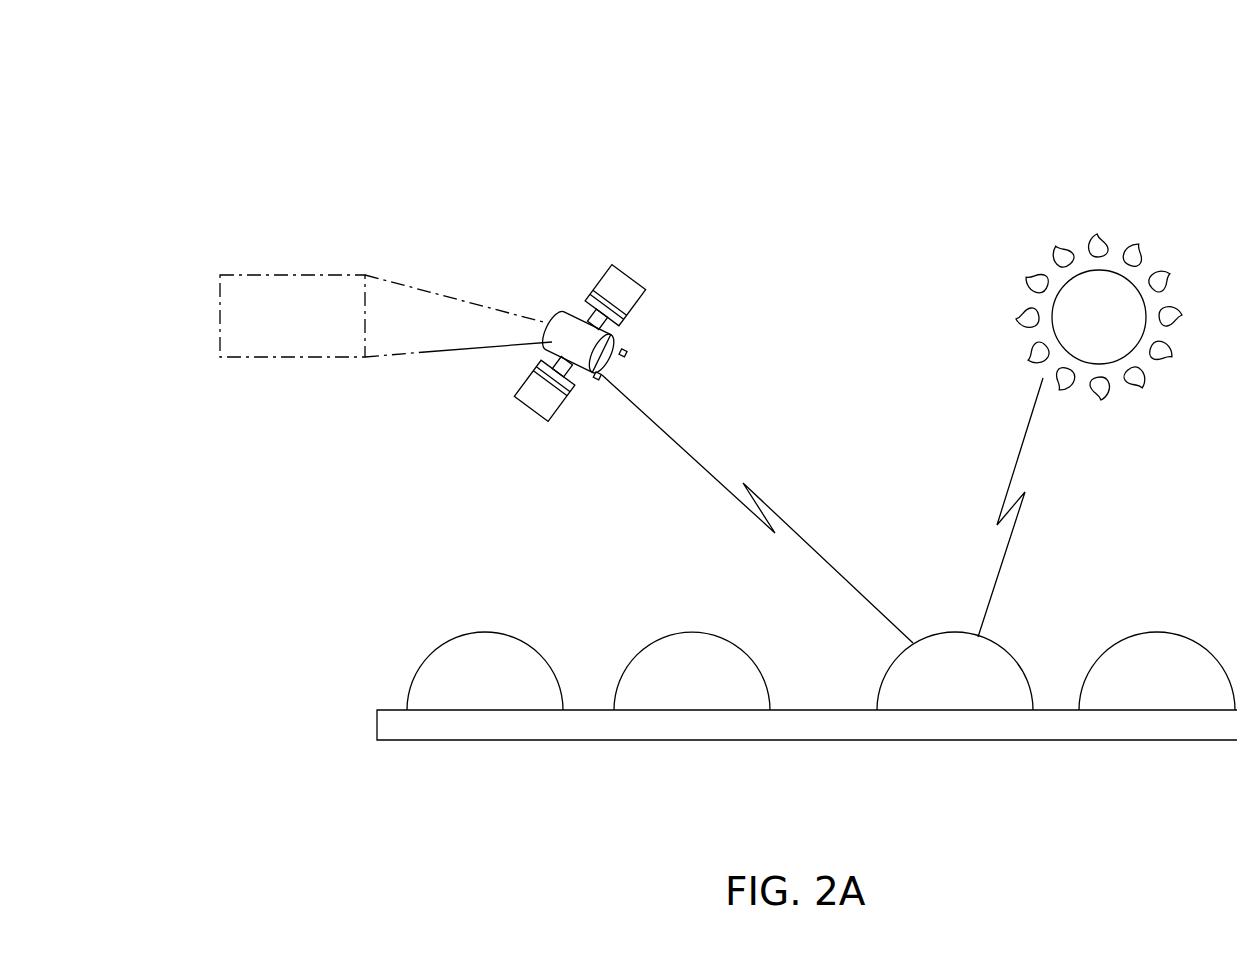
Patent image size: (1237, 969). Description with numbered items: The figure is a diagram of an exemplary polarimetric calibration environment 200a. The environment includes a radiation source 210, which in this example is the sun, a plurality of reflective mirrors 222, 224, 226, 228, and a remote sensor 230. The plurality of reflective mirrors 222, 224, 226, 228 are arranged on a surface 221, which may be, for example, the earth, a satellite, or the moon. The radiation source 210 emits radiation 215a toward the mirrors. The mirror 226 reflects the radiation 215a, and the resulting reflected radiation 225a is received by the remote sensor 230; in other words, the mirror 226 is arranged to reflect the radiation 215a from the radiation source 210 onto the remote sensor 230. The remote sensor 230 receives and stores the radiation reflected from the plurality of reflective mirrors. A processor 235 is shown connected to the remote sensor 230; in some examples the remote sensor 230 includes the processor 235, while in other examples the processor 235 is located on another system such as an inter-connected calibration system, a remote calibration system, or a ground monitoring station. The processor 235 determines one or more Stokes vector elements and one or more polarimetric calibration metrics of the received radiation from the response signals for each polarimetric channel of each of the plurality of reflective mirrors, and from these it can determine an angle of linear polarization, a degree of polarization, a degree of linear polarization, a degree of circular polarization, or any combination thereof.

The polarimetric calibration environment 200a is at (853, 77).
The radiation source 210 is at (1035, 252).
The radiation 215a is at (1030, 448).
The surface 221 is at (598, 752).
The reflective mirror 222 is at (464, 700).
The reflective mirror 224 is at (671, 700).
The reflective mirror 226 is at (934, 700).
The reflective mirror 228 is at (1136, 700).
The reflected radiation 225a is at (683, 449).
The remote sensor 230 is at (618, 276).
The processor 235 is at (273, 343).